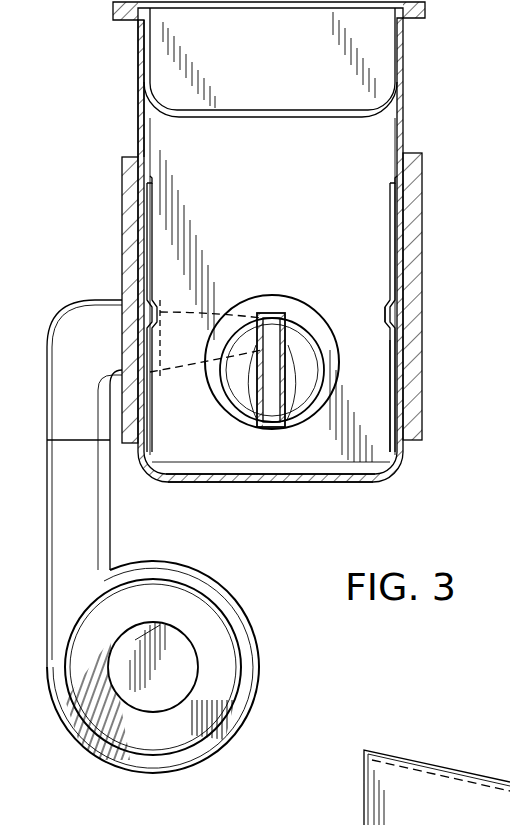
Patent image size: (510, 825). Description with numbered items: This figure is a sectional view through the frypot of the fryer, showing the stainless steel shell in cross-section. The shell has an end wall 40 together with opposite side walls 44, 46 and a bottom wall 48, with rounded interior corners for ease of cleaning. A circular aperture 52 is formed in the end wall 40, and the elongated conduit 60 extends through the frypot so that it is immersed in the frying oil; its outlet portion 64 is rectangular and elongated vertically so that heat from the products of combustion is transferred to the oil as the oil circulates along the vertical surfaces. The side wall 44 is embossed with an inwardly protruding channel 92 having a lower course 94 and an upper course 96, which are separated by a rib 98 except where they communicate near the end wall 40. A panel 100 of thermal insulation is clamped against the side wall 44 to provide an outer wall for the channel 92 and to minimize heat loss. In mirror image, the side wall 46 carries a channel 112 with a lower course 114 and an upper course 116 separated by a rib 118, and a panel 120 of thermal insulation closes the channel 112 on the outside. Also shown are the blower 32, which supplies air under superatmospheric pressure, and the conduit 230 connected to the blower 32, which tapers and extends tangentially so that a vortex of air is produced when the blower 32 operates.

The blower 32 is at (230, 581).
The end wall 40 is at (176, 137).
The side wall 44 is at (137, 52).
The side wall 46 is at (403, 52).
The bottom wall 48 is at (340, 486).
The circular aperture 52 is at (297, 325).
The elongated conduit 60 is at (302, 298).
The outlet portion 64 is at (290, 364).
The channel 92 is at (147, 205).
The lower course 94 is at (140, 358).
The upper course 96 is at (147, 233).
The rib 98 is at (152, 313).
The panel of thermal insulation 100 is at (130, 262).
The channel 112 is at (402, 207).
The lower course 114 is at (402, 364).
The upper course 116 is at (402, 237).
The rib 118 is at (393, 320).
The panel of thermal insulation 120 is at (420, 272).
The conduit 230 is at (485, 776).